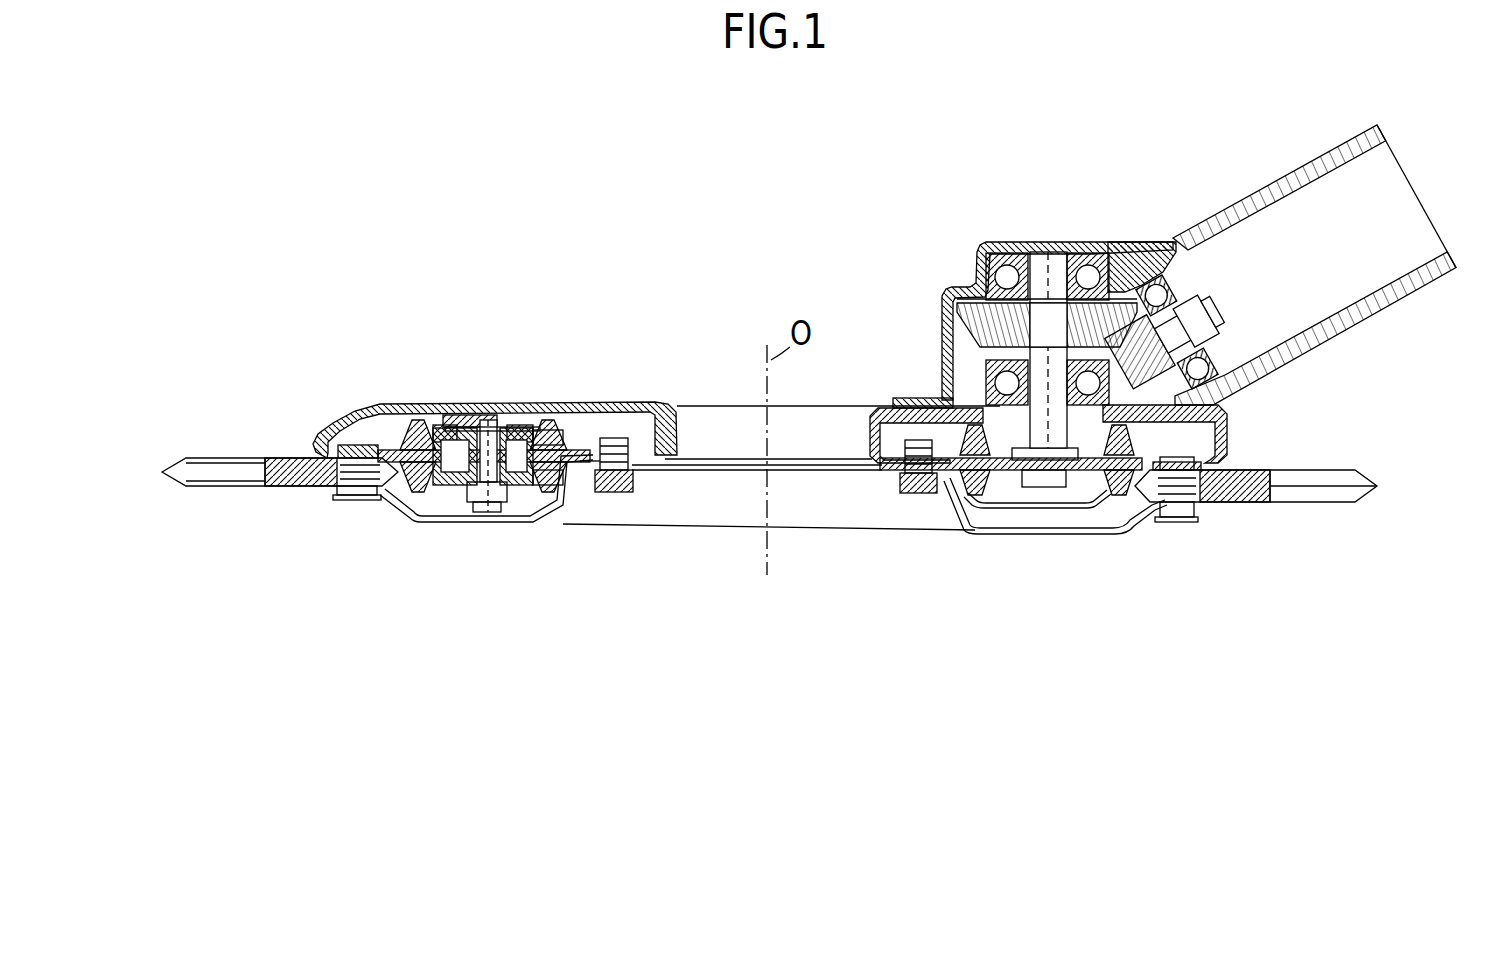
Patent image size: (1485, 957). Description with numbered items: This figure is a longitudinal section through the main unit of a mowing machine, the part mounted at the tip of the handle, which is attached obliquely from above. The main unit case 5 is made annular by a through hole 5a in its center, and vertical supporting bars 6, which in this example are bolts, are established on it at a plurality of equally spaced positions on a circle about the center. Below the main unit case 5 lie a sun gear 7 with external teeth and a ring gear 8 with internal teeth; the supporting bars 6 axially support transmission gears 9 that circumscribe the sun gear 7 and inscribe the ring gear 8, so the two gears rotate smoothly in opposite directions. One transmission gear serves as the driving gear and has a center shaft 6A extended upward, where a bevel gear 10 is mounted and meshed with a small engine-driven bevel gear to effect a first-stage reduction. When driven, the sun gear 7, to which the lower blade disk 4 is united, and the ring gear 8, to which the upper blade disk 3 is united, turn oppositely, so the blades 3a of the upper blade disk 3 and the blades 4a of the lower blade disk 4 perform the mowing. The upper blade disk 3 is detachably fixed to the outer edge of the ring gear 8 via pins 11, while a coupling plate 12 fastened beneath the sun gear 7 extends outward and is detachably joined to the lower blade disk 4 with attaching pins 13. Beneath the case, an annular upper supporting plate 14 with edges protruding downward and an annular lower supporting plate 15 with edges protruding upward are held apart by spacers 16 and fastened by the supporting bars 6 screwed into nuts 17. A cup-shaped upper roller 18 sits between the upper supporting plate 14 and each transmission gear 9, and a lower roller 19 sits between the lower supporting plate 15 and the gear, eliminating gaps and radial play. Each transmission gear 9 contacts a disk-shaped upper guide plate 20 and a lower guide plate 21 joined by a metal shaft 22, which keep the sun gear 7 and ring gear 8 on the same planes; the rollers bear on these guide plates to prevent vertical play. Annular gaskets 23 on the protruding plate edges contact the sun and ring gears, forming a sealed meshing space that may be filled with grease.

The upper blade disk 3 is at (1240, 470).
The blades of upper blade disk 3a is at (1345, 485).
The lower blade disk 4 is at (1240, 512).
The blades of lower blade disk 4a is at (1340, 515).
The main unit case 5 is at (739, 400).
The through hole 5a is at (678, 425).
The supporting bars 6 is at (505, 412).
The center shaft 6A is at (1042, 265).
The sun gear 7 is at (605, 410).
The ring gear 8 is at (386, 404).
The transmission gears 9 is at (518, 522).
The bevel gear 10 is at (965, 288).
The pins 11 is at (345, 410).
The coupling plate 12 is at (418, 528).
The attaching pins 13 is at (355, 492).
The upper supporting plate 14 is at (546, 412).
The lower supporting plate 15 is at (565, 525).
The spacers 16 is at (486, 412).
The nuts 17 is at (487, 520).
The upper roller 18 is at (455, 410).
The lower roller 19 is at (553, 522).
The upper guide plate 20 is at (558, 412).
The lower guide plate 21 is at (420, 524).
The metal shaft 22 is at (455, 522).
The annular gaskets 23 is at (925, 407).